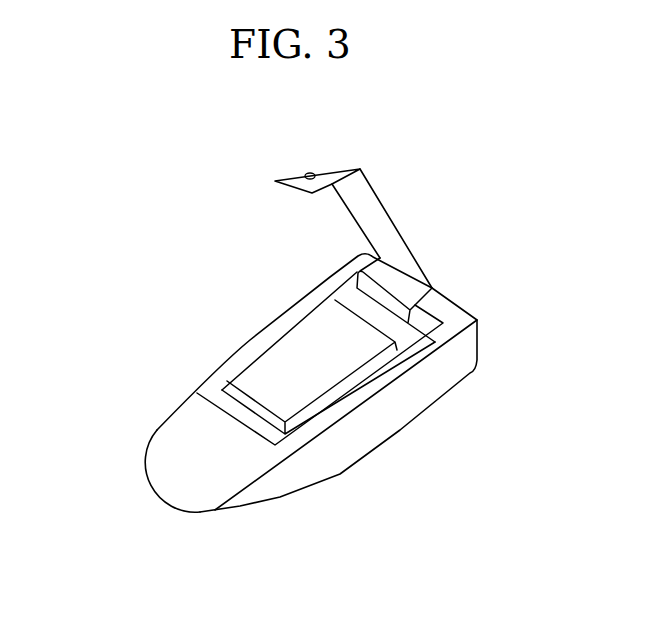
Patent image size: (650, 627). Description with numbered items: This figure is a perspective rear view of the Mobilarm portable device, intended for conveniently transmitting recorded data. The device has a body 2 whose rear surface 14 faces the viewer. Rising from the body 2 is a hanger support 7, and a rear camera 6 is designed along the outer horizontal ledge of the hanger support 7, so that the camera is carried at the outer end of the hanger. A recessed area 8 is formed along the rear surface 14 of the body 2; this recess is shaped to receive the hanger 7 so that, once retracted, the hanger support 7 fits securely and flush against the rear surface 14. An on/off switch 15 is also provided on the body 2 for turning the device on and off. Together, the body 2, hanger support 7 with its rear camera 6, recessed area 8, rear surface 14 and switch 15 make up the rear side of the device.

The body 2 is at (428, 390).
The rear camera 6 is at (303, 172).
The hanger support 7 is at (393, 221).
The recessed area 8 is at (217, 392).
The rear surface 14 is at (207, 468).
The on/off switch 15 is at (313, 461).